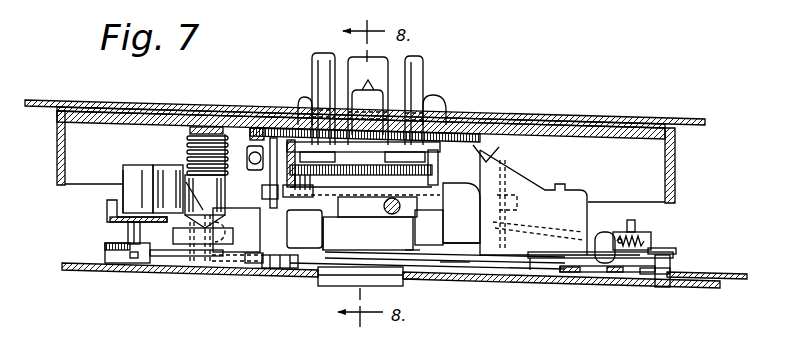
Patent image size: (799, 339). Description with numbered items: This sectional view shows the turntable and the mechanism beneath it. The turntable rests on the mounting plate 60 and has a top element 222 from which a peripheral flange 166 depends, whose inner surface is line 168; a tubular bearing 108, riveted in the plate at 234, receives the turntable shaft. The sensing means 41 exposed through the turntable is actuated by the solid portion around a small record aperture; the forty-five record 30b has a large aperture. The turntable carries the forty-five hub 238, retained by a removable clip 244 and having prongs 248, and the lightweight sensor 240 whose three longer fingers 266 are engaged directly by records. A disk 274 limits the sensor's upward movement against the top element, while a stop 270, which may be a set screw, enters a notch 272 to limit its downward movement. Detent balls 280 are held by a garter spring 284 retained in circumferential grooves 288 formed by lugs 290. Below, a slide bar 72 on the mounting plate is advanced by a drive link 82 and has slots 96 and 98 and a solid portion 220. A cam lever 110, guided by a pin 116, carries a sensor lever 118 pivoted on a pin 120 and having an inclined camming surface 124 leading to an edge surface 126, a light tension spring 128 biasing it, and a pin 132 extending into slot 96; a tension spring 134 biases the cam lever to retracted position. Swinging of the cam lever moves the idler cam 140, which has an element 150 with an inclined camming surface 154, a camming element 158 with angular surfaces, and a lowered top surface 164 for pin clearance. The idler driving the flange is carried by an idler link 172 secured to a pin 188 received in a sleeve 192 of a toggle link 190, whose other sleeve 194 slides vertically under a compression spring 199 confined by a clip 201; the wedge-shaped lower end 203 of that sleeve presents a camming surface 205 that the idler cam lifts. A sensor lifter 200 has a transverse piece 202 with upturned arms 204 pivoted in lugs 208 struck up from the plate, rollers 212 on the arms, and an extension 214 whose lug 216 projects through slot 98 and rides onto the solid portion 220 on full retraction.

The 45 record 30b is at (605, 118).
The sensing means 41 is at (448, 89).
The mounting plate 60 is at (703, 288).
The slide bar 72 is at (741, 271).
The drive link 82 is at (637, 231).
The slot 96 is at (648, 274).
The slot 98 is at (603, 272).
The bearing 108 is at (326, 285).
The cam lever 110 is at (503, 266).
The pin 116 is at (523, 269).
The sensor lever 118 is at (586, 212).
The pin 120 is at (557, 258).
The camming surface 124 is at (492, 160).
The edge surface 126 is at (435, 230).
The tension spring 128 is at (652, 245).
The pin 132 is at (675, 253).
The tension spring 134 is at (240, 262).
The idler cam 140 is at (102, 254).
The element 150 is at (115, 263).
The camming surface 154 is at (178, 240).
The camming element 158 is at (188, 246).
The top surface 164 is at (268, 266).
The peripheral flange 166 is at (677, 180).
The line 168 is at (670, 152).
The idler link 172 is at (108, 218).
The pin 188 is at (130, 237).
The toggle link 190 is at (152, 165).
The sleeve 192 is at (123, 192).
The sleeve 194 is at (265, 170).
The compression spring 199 is at (203, 133).
The sensor lifter 200 is at (268, 176).
The clip 201 is at (230, 132).
The transverse piece 202 is at (427, 227).
The wedge-shaped lower end 203 is at (203, 212).
The upturned arms 204 is at (428, 254).
The camming surface 205 is at (218, 224).
The lugs 208 is at (494, 222).
The rollers 212 is at (302, 110).
The extension 214 is at (525, 214).
The lug 216 is at (583, 272).
The solid portion 220 is at (567, 272).
The top element 222 is at (548, 128).
The riveted securement 234 is at (400, 285).
The 45 hub 238 is at (340, 219).
The sensor 240 is at (330, 198).
The removable clip 244 is at (410, 252).
The prong 248 is at (362, 100).
The fingers 266 is at (355, 57).
The stop 270 is at (394, 215).
The notch 272 is at (386, 208).
The disk 274 is at (499, 126).
The steel balls 280 is at (337, 186).
The garter spring 284 is at (350, 166).
The circumferential grooves 288 is at (433, 168).
The lugs 290 is at (437, 165).